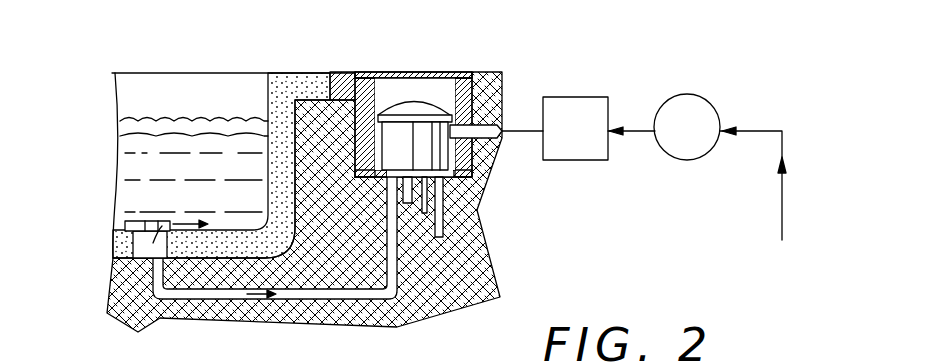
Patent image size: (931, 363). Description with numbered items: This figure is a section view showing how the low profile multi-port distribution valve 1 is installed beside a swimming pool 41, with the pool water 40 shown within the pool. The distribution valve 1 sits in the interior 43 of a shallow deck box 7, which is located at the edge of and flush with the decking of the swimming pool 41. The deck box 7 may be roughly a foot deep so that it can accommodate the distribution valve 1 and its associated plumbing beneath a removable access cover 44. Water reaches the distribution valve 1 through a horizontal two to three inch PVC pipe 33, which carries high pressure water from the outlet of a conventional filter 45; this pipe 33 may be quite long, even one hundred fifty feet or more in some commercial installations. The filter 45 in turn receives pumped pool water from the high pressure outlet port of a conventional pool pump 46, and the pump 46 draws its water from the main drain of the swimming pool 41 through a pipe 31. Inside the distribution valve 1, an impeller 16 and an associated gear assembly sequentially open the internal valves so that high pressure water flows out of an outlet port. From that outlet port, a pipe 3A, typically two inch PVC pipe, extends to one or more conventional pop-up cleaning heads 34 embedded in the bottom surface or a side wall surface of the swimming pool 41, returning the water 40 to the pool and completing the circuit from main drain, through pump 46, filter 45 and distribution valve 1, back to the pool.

The low profile multi-port distribution valve 1 is at (398, 94).
The pipe 3A is at (405, 326).
The shallow deck box 7 is at (476, 172).
The impeller 16 is at (266, 362).
The pipe 31 is at (782, 198).
The pipe 33 is at (502, 78).
The pop-up cleaning heads 34 is at (146, 221).
The water 40 is at (165, 118).
The swimming pool 41 is at (232, 57).
The interior 43 is at (468, 72).
The removable access cover 44 is at (417, 72).
The filter 45 is at (592, 150).
The pool pump 46 is at (688, 150).